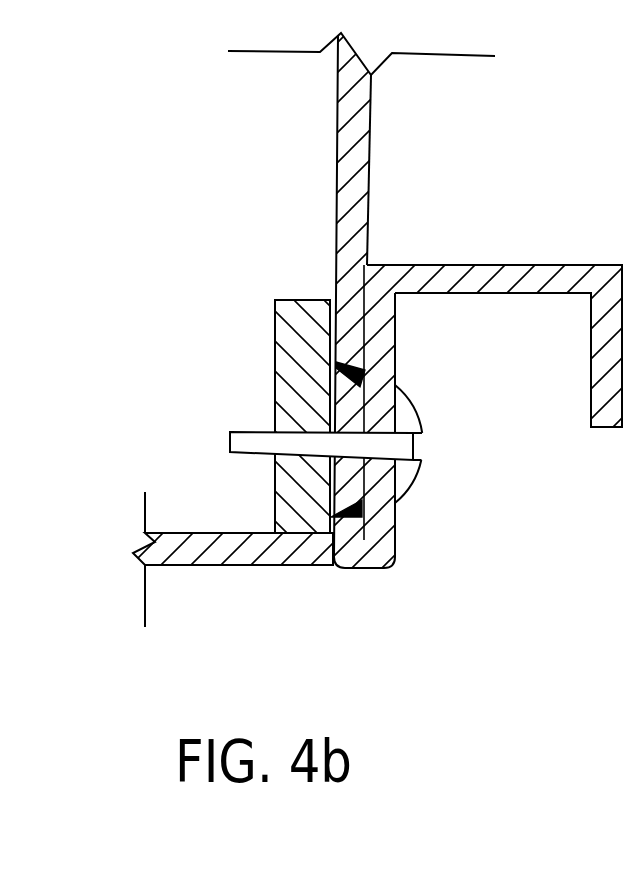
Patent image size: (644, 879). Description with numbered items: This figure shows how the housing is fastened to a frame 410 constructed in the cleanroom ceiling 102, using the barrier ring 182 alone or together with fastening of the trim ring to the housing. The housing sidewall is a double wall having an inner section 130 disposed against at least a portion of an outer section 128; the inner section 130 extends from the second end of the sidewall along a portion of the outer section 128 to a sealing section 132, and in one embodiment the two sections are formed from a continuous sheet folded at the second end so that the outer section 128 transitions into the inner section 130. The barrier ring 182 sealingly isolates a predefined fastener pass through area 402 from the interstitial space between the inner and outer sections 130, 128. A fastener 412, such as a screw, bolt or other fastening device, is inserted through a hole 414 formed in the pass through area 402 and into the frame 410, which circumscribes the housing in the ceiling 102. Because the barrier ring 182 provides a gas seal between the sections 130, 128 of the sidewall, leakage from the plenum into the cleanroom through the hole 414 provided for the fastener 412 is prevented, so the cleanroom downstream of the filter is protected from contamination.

The cleanroom ceiling 102 is at (255, 566).
The outer section 128 is at (338, 197).
The inner section 130 is at (397, 317).
The sealing section 132 is at (463, 265).
The barrier ring 182 is at (366, 370).
The fastener pass through area 402 is at (352, 413).
The frame 410 is at (302, 300).
The fastener 412 is at (418, 472).
The hole 414 is at (393, 493).